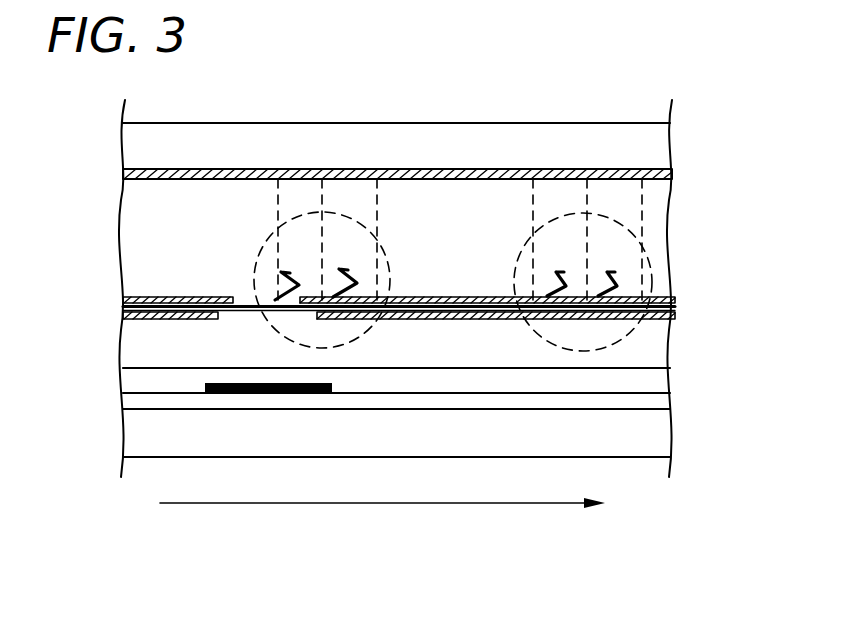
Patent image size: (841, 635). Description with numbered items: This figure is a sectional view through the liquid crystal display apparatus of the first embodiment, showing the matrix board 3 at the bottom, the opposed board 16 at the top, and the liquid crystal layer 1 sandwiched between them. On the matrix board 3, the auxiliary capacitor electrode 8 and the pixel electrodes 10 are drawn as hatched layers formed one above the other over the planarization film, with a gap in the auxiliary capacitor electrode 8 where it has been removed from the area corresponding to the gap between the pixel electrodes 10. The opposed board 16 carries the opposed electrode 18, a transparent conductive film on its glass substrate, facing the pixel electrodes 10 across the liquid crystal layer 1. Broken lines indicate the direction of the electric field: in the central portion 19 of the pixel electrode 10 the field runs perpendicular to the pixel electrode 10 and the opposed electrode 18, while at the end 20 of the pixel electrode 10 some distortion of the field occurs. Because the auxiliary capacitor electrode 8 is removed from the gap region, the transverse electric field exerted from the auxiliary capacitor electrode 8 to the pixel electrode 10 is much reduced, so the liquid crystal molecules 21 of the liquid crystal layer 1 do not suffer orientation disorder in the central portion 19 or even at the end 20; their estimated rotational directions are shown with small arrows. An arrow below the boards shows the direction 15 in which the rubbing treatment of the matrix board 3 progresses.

The liquid crystal layer 1 is at (734, 200).
The matrix board 3 is at (734, 290).
The auxiliary capacitor electrode 8 is at (125, 314).
The pixel electrode 10 is at (125, 298).
The direction 15 is at (232, 505).
The opposed board 16 is at (734, 112).
The opposed electrode 18 is at (125, 173).
The central portion of the pixel electrode 19 is at (603, 213).
The end of the pixel electrode 20 is at (378, 243).
The liquid crystal molecules 21 is at (618, 300).